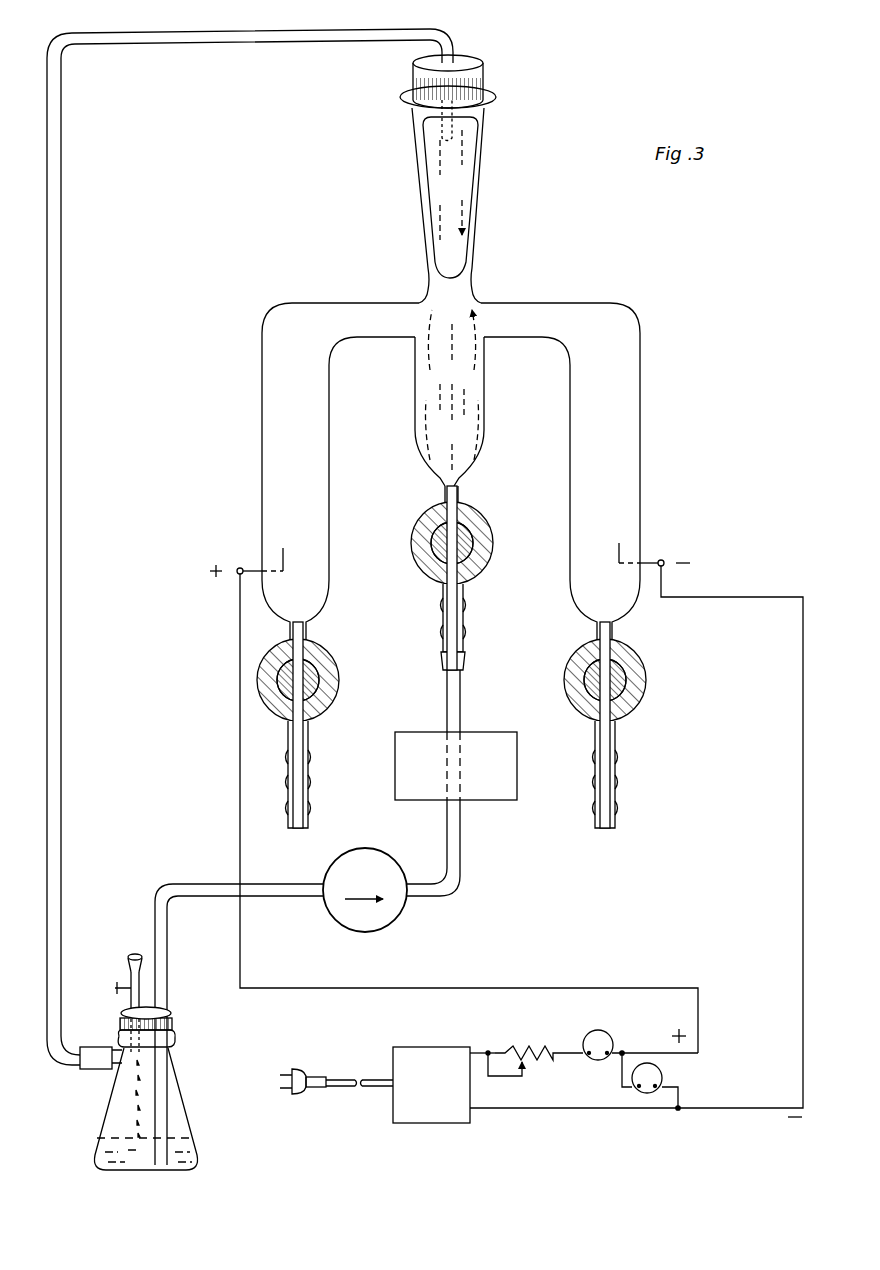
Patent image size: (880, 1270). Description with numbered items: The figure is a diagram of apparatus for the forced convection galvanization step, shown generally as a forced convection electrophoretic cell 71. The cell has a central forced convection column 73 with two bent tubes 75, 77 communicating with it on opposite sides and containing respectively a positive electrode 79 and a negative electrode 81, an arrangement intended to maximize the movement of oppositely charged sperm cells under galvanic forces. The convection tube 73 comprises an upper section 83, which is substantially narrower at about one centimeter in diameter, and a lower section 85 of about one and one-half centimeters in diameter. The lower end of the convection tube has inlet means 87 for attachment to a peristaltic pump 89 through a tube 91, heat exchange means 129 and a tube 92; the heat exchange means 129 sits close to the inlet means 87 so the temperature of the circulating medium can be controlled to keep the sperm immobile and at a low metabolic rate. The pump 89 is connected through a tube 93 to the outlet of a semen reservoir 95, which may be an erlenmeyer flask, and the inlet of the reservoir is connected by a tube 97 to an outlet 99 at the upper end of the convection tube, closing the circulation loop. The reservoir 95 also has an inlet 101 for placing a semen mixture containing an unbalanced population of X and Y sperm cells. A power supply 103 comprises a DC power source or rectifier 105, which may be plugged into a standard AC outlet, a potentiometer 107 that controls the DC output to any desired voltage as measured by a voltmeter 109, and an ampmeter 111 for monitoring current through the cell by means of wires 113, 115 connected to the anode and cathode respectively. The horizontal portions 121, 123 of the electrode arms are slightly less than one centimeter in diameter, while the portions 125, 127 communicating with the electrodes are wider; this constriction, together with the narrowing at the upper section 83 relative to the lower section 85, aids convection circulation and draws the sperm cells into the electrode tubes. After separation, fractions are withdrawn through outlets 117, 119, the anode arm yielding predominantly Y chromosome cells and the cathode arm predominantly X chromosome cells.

The forced convection electrophoretic cell 71 is at (452, 329).
The central forced convection column 73 is at (480, 248).
The bent tube 75 is at (259, 357).
The bent tube 77 is at (643, 346).
The positive electrode 79 is at (276, 556).
The negative electrode 81 is at (626, 543).
The upper section 83 is at (412, 150).
The lower section 85 is at (415, 410).
The inlet means 87 is at (468, 600).
The peristaltic pump 89 is at (342, 920).
The tube 91 is at (461, 690).
The tube 92 is at (461, 842).
The tube 93 is at (255, 893).
The semen reservoir 95 is at (177, 1060).
The tube 97 is at (210, 36).
The outlet 99 is at (456, 58).
The inlet 101 is at (130, 956).
The power supply 103 is at (479, 1058).
The DC power source or rectifier 105 is at (431, 1085).
The potentiometer 107 is at (505, 1050).
The voltmeter 109 is at (664, 1077).
The ampmeter 111 is at (589, 1030).
The wire 113 is at (590, 986).
The wire 115 is at (803, 724).
The outlet 117 is at (310, 812).
The outlet 119 is at (618, 812).
The horizontal portion of electrode containing arm 121 is at (358, 303).
The horizontal portion of electrode containing arm 123 is at (526, 303).
The portion of arm communicating with electrode 125 is at (260, 468).
The portion of arm communicating with electrode 127 is at (641, 448).
The heat exchange means 129 is at (395, 776).